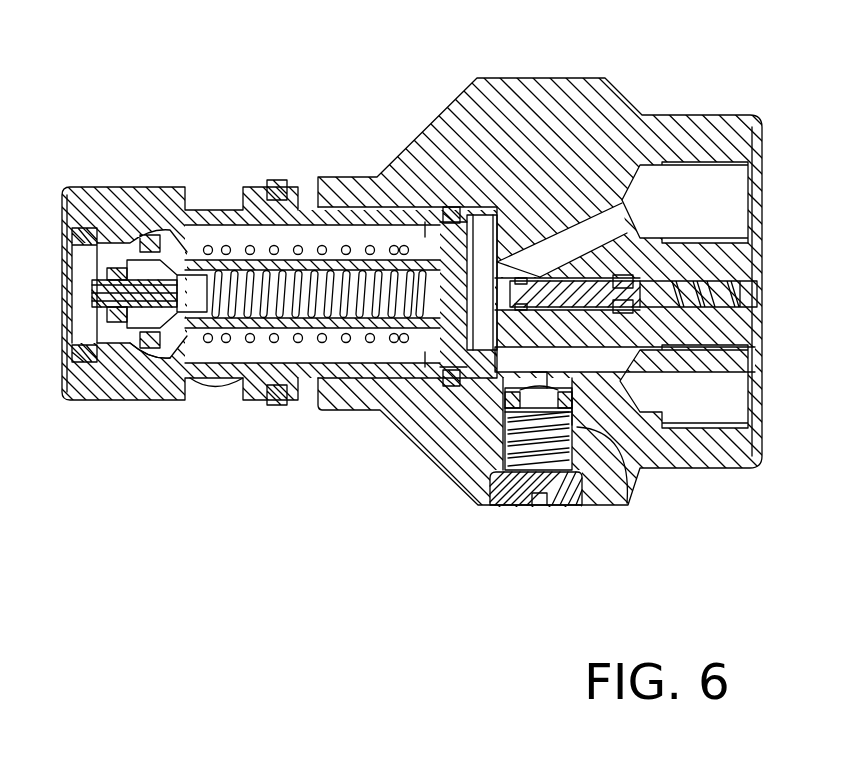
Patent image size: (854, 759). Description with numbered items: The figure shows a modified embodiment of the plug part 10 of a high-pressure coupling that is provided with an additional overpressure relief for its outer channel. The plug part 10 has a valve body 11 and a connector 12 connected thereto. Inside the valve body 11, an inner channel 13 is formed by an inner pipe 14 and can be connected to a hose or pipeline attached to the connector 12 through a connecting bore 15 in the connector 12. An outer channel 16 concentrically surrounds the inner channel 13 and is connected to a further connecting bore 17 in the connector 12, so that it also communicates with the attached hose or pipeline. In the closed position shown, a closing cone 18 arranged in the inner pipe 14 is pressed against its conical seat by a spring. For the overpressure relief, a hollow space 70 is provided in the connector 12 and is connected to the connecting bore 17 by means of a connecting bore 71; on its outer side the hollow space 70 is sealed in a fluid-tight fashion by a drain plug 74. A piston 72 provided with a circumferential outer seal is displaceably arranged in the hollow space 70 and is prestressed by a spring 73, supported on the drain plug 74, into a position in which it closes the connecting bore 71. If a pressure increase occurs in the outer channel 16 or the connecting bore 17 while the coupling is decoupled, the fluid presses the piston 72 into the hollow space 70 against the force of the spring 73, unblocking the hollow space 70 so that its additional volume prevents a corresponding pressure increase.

The plug part 10 is at (326, 127).
The valve body 11 is at (127, 203).
The connector 12 is at (614, 120).
The inner channel 13 is at (188, 277).
The inner pipe 14 is at (242, 265).
The connecting bore 15 is at (513, 170).
The outer channel 16 is at (266, 350).
The connecting bore 17 is at (588, 358).
The closing cone 18 is at (168, 357).
The hollow space 70 is at (617, 473).
The connecting bore 71 is at (533, 373).
The piston 72 is at (507, 413).
The spring 73 is at (558, 450).
The drain plug 74 is at (560, 495).